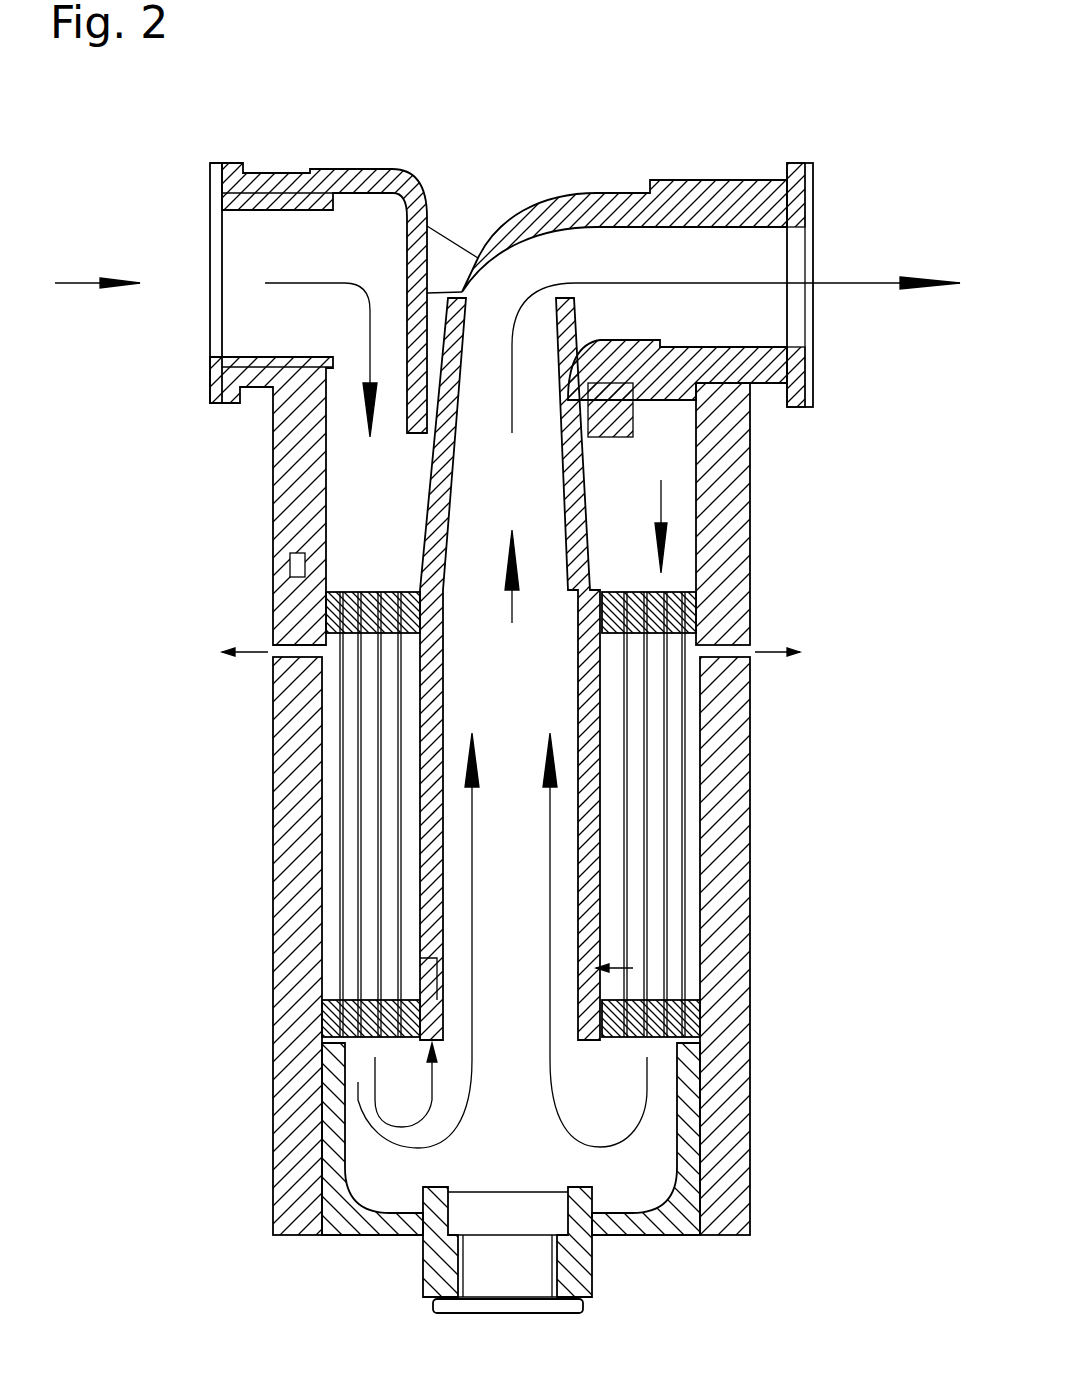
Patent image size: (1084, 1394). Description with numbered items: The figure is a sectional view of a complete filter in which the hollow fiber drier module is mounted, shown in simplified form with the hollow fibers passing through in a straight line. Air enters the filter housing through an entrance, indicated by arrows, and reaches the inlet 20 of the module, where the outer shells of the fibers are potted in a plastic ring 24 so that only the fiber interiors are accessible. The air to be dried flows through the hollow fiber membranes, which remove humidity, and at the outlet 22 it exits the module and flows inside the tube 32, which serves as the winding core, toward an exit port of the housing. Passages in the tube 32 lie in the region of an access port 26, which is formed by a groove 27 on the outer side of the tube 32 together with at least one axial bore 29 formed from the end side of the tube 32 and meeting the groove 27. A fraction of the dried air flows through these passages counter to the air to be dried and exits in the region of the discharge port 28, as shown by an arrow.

The inlet 20 is at (251, 762).
The outlet 22 is at (360, 1082).
The plastic ring 24 is at (413, 590).
The access port 26 is at (413, 955).
The groove 27 is at (425, 969).
The discharge port 28 is at (273, 687).
The axial bore 29 is at (580, 1165).
The tube 32 is at (600, 885).